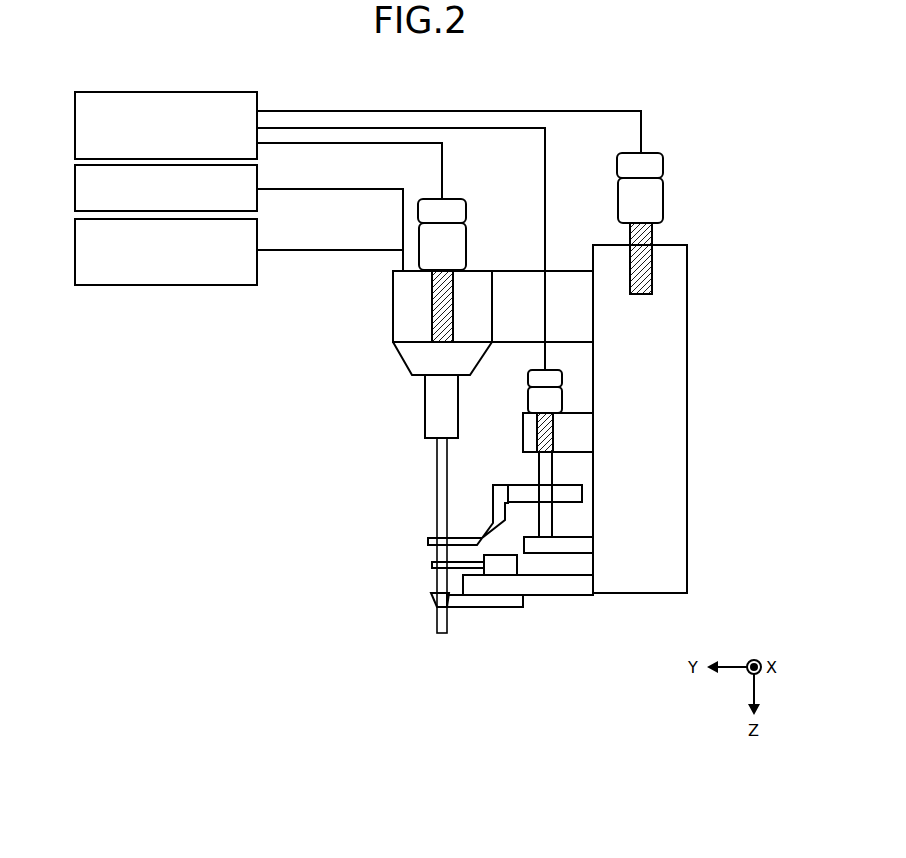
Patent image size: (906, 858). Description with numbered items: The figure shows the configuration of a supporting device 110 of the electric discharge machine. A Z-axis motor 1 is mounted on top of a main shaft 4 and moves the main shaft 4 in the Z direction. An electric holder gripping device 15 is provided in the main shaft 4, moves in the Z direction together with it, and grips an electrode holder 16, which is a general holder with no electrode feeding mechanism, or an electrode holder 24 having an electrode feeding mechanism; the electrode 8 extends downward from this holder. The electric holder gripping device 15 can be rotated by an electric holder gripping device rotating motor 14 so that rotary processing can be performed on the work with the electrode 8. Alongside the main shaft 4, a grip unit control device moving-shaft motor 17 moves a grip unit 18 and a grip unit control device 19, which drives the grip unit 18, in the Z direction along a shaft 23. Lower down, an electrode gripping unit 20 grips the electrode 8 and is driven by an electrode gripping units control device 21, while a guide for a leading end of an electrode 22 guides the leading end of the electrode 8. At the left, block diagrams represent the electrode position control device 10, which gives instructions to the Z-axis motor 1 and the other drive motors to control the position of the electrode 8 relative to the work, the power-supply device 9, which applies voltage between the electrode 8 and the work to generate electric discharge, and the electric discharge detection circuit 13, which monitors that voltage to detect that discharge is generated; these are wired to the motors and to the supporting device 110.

The Z-axis motor 1 is at (657, 190).
The main shaft 4 is at (680, 335).
The electrode 8 is at (440, 483).
The power-supply device 9 is at (75, 183).
The electrode position control device 10 is at (75, 124).
The electric discharge detection circuit 13 is at (75, 245).
The electric holder gripping device rotating motor 14 is at (458, 242).
The electric holder gripping device 15 is at (400, 314).
The electrode holder 16 is at (405, 406).
The electrode holder having an electrode feeding mechanism 24 is at (435, 400).
The grip unit control device moving-shaft motor 17 is at (528, 400).
The grip unit 18 is at (497, 495).
The grip unit control device 19 is at (520, 490).
The electrode gripping unit 20 is at (437, 565).
The electrode gripping units control device 21 is at (500, 572).
The guide for a leading end of an electrode 22 is at (437, 602).
The shaft 23 is at (546, 472).
The supporting device 110 is at (750, 308).